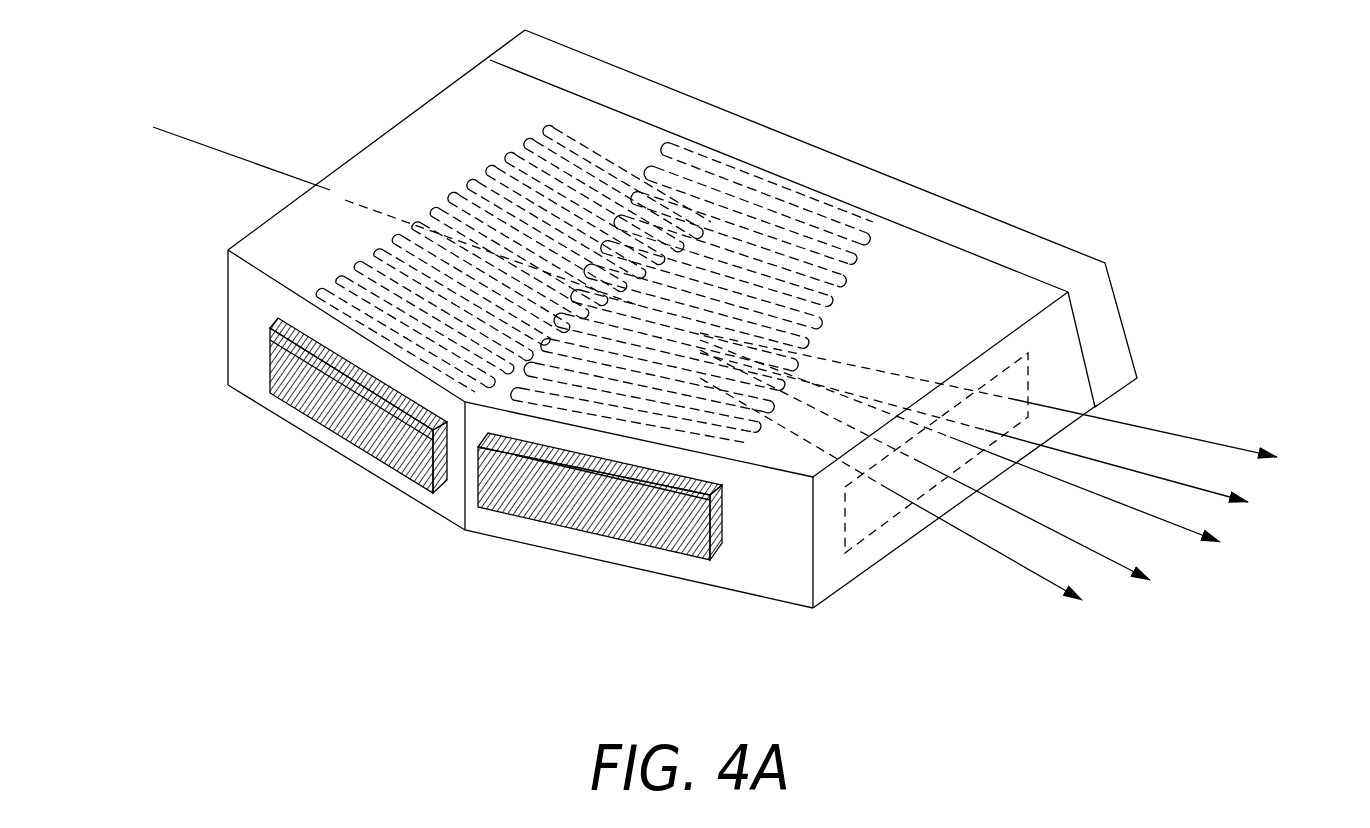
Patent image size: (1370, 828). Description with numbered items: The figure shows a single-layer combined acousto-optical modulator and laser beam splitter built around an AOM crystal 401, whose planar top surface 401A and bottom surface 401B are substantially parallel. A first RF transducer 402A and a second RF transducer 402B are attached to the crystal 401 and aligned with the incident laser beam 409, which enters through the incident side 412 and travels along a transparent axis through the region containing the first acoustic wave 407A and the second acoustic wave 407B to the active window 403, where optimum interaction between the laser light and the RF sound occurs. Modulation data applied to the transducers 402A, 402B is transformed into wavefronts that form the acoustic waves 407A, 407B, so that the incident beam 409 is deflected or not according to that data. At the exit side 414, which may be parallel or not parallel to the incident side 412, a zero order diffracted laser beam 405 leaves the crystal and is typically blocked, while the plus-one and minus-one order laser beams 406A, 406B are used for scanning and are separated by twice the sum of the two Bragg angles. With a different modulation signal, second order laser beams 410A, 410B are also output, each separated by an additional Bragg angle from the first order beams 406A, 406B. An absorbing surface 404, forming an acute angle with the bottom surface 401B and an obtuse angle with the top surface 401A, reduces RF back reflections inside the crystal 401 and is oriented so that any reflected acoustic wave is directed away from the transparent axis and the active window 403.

The AOM crystal 401 is at (392, 198).
The top surface 401A is at (969, 318).
The bottom surface 401B is at (827, 598).
The first RF transducer 402A is at (368, 440).
The second RF transducer 402B is at (580, 523).
The active window 403 is at (865, 510).
The absorbing surface 404 is at (944, 211).
The zero order diffracted laser beam 405 is at (1183, 532).
The +1 order laser beam 406A is at (1110, 565).
The -1 order laser beam 406B is at (1235, 495).
The first acoustic wave 407A is at (530, 143).
The second acoustic wave 407B is at (813, 213).
The incident laser beam 409 is at (233, 158).
The +2 order laser beam 410A is at (1007, 560).
The -2 order laser beam 410B is at (1140, 425).
The incident side 412 is at (387, 134).
The exit side 414 is at (823, 544).